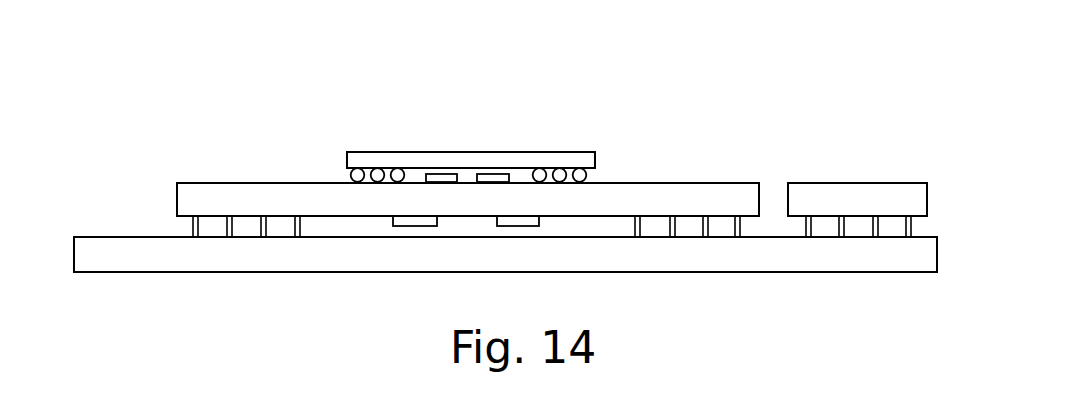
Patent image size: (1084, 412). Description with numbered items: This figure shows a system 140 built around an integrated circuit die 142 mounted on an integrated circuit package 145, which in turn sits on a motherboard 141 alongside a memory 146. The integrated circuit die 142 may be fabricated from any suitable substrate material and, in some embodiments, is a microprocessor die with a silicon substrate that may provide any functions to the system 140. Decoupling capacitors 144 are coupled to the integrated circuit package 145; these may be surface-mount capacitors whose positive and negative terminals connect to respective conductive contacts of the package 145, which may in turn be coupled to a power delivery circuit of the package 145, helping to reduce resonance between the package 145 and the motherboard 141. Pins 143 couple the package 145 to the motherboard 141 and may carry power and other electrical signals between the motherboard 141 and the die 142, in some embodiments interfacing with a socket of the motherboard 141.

The system 140 is at (449, 71).
The motherboard 141 is at (93, 237).
The integrated circuit die 142 is at (438, 152).
The pins 143 is at (182, 226).
The decoupling capacitors 144 is at (442, 183).
The integrated circuit package 145 is at (689, 182).
The memory 146 is at (856, 182).